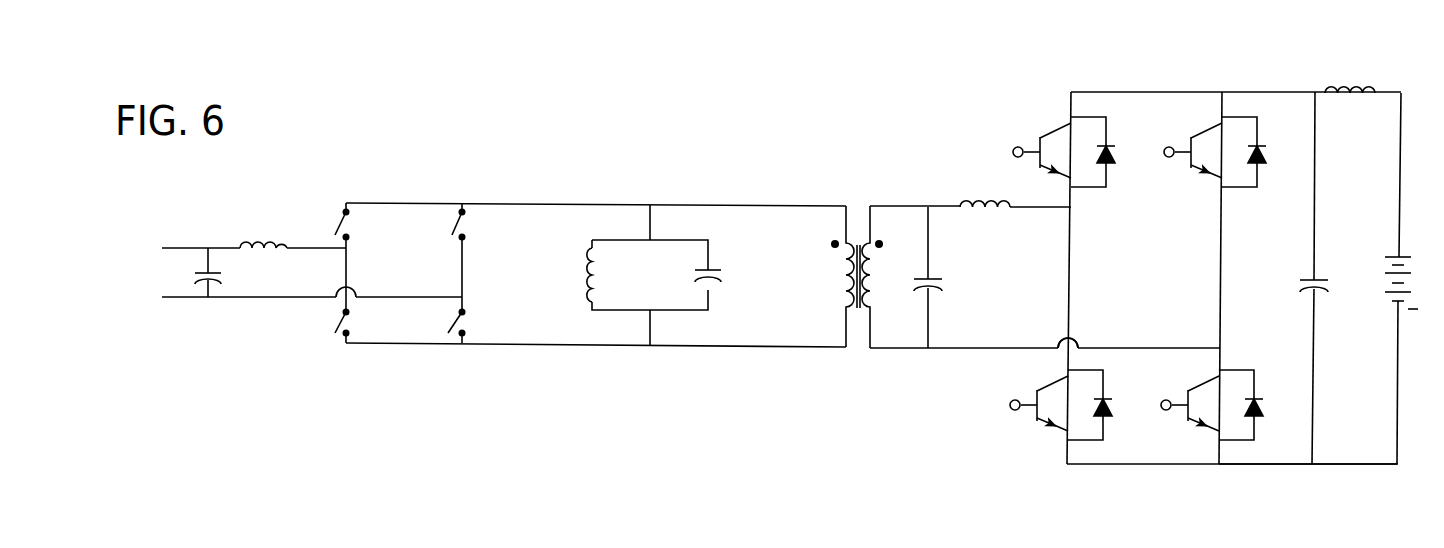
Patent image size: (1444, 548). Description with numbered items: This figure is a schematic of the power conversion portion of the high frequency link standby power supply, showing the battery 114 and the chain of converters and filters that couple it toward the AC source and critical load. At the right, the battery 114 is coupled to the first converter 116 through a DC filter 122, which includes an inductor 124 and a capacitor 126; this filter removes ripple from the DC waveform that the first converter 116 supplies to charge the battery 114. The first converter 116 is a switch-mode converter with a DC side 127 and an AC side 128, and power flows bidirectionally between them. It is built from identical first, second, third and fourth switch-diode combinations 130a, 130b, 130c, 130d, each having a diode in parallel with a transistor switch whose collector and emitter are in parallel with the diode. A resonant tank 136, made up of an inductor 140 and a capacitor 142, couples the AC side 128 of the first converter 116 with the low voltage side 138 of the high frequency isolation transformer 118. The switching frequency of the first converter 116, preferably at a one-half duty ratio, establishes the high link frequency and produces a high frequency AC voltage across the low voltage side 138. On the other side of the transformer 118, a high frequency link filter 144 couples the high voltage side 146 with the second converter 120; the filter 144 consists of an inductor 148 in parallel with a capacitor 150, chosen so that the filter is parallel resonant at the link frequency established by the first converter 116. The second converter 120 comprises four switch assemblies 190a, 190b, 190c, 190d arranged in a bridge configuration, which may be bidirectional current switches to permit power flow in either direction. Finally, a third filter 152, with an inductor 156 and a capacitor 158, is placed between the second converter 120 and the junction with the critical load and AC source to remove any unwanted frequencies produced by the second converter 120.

The battery 114 is at (1383, 253).
The first converter 116 is at (1187, 270).
The high frequency isolation transformer 118 is at (855, 262).
The second converter 120 is at (590, 245).
The DC filter 122 is at (1331, 470).
The inductor 124 is at (1328, 88).
The capacitor 126 is at (1310, 278).
The DC side 127 is at (1262, 472).
The AC side 128 is at (1050, 358).
The first switch-diode combination 130a is at (1064, 152).
The second switch-diode combination 130b is at (1212, 405).
The third switch-diode combination 130c is at (1215, 152).
The fourth switch-diode combination 130d is at (1061, 405).
The resonant tank 136 is at (1045, 300).
The low voltage side 138 is at (878, 321).
The inductor 140 is at (983, 200).
The capacitor 142 is at (937, 277).
The high frequency link filter 144 is at (652, 299).
The high voltage side 146 is at (837, 319).
The inductor 148 is at (587, 251).
The capacitor 150 is at (714, 268).
The third filter 152 is at (309, 286).
The inductor 156 is at (240, 246).
The capacitor 158 is at (217, 272).
The switch assembly 190a is at (349, 225).
The switch assembly 190b is at (453, 324).
The switch assembly 190c is at (464, 226).
The switch assembly 190d is at (349, 328).